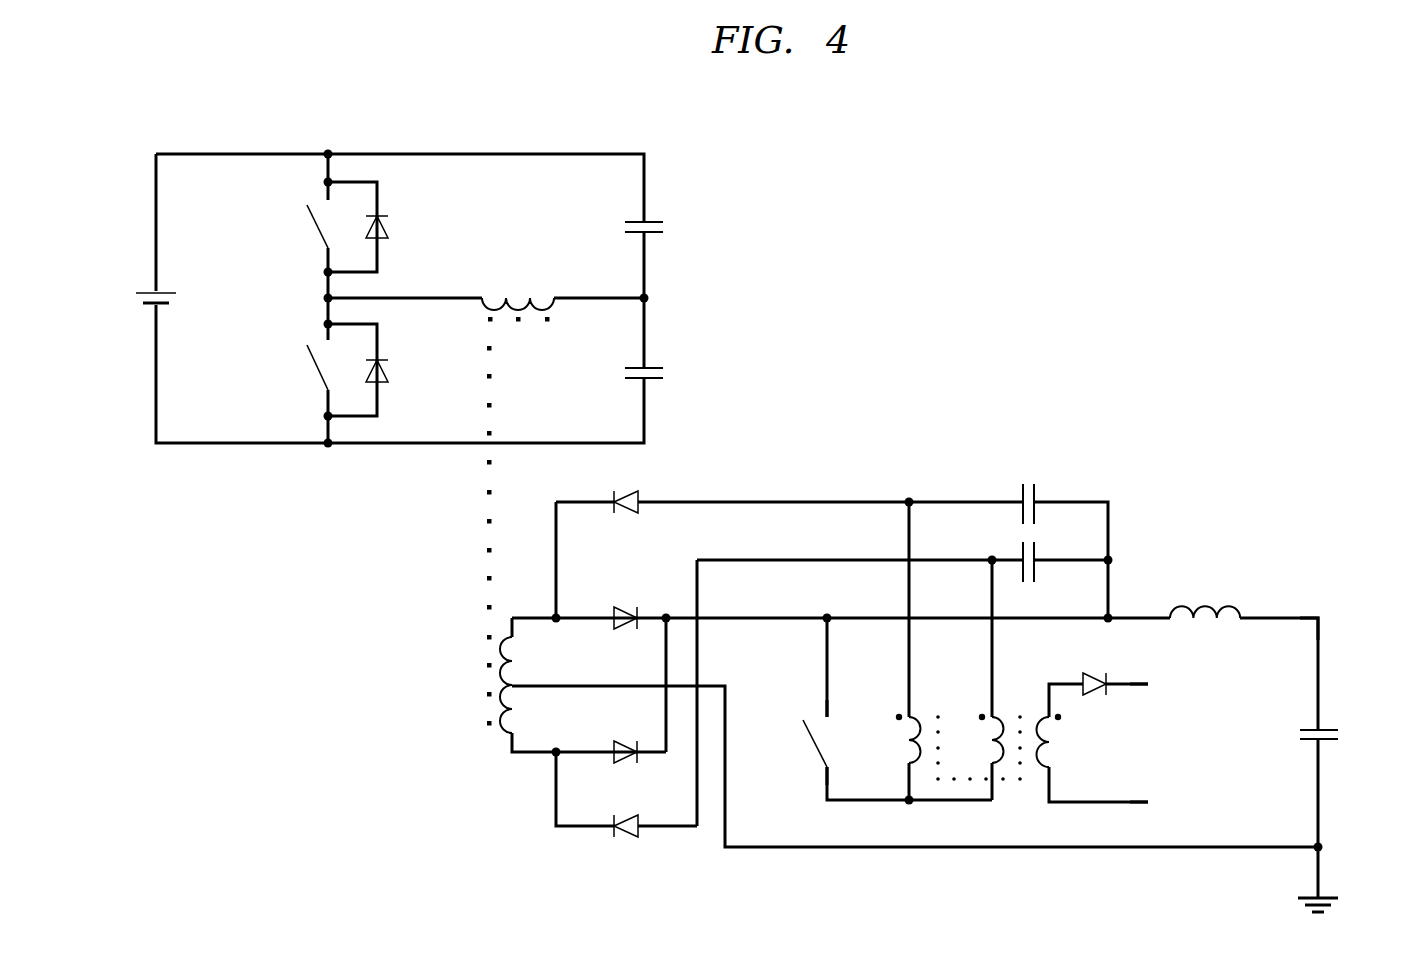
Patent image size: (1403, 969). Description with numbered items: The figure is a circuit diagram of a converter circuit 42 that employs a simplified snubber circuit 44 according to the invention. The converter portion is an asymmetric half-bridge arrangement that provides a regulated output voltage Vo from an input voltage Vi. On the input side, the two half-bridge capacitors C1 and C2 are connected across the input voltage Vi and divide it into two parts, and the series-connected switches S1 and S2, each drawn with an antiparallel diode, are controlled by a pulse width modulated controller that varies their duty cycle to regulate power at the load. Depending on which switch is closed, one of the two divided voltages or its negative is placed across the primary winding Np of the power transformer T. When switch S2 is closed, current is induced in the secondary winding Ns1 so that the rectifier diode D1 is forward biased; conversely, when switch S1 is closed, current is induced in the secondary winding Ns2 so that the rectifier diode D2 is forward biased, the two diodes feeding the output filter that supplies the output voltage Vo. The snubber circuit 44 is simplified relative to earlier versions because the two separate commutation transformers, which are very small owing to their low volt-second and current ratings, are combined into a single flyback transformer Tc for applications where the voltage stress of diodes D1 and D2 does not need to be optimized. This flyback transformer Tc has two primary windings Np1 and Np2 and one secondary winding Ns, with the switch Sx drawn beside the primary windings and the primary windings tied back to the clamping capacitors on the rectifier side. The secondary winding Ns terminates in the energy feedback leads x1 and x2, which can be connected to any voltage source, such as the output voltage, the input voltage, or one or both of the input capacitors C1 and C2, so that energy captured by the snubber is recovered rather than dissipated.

The converter circuit 42 is at (1187, 231).
The simplified snubber circuit 44 is at (973, 474).
The input voltage Vi is at (170, 301).
The switch S1 is at (334, 226).
The switch S2 is at (334, 370).
The half-bridge capacitor C1 is at (664, 233).
The half-bridge capacitor C2 is at (664, 379).
The primary winding Np is at (486, 294).
The power transformer T is at (504, 525).
The winding Ns1 is at (534, 651).
The winding Ns2 is at (534, 709).
The rectifier diode D1 is at (627, 603).
The rectifier diode D2 is at (627, 737).
The switch Sx is at (802, 737).
The primary winding Np1 is at (888, 651).
The primary winding Np2 is at (972, 680).
The secondary winding Ns is at (1093, 737).
The flyback transformer Tc is at (982, 775).
The energy feedback lead x1 is at (1155, 685).
The energy feedback lead x2 is at (1155, 803).
The output voltage Vo is at (1331, 630).